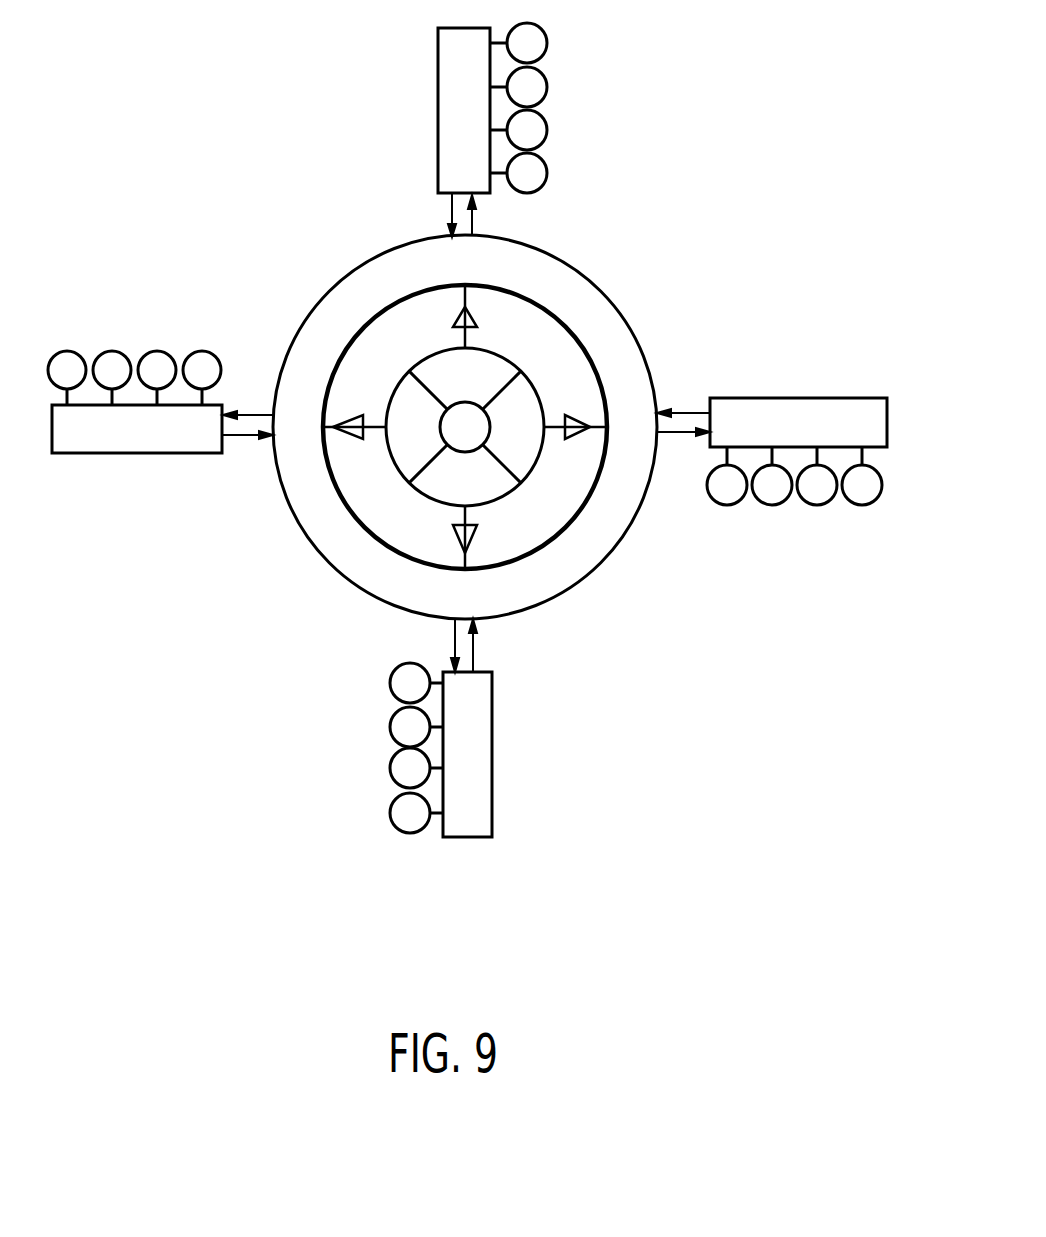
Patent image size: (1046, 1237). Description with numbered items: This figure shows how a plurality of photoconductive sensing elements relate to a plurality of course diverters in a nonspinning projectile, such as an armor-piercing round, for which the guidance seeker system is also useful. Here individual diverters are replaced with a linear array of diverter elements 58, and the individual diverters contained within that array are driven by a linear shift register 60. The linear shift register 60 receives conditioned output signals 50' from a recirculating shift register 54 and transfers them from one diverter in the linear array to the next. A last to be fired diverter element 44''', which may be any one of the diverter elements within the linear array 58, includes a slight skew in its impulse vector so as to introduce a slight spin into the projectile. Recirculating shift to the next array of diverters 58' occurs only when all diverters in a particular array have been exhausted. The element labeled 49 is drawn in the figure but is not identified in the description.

The recirculating shift register 54 is at (642, 340).
The linear array of diverter elements 58 is at (421, 812).
The next array of diverters 58' is at (798, 502).
The linear shift register 60 is at (480, 753).
The terminal device 49 is at (397, 678).
The last to be fired diverter element 44''' is at (354, 815).
The conditioned output signals 50' is at (358, 650).